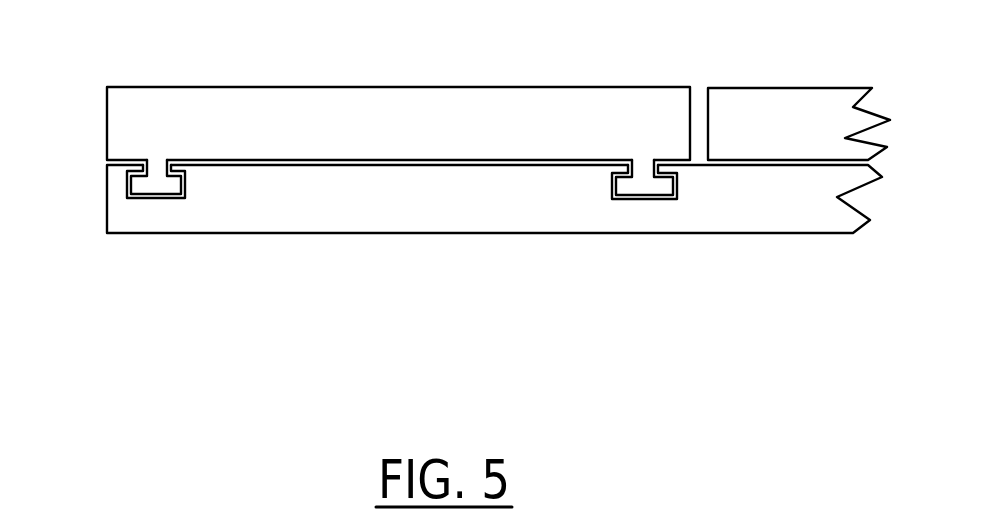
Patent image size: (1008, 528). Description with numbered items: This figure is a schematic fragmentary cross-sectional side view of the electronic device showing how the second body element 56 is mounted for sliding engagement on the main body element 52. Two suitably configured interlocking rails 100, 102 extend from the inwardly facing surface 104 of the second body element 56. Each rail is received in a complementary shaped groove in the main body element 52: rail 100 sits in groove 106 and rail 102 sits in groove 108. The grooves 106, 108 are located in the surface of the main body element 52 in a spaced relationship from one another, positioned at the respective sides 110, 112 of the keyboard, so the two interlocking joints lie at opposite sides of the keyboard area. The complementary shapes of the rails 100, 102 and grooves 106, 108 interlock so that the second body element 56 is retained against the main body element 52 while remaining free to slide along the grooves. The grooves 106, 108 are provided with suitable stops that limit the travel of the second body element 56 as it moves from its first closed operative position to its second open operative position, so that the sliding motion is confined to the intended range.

The main body element 52 is at (763, 215).
The second body element 56 is at (507, 97).
The interlocking rail 100 is at (177, 183).
The interlocking rail 102 is at (612, 182).
The inwardly facing surface 104 is at (381, 176).
The groove 106 is at (122, 174).
The groove 108 is at (675, 189).
The side of the keyboard 110 is at (150, 262).
The side of the keyboard 112 is at (734, 283).